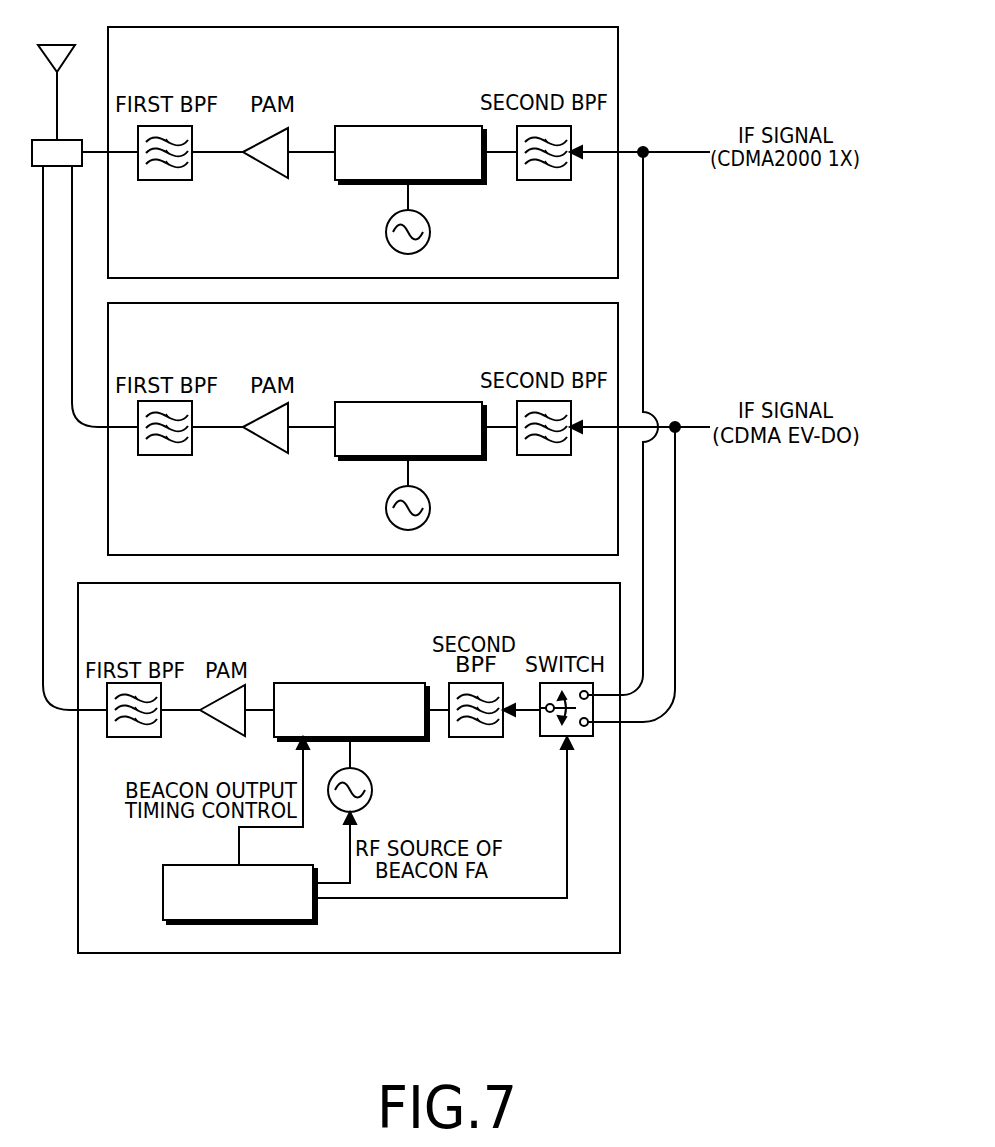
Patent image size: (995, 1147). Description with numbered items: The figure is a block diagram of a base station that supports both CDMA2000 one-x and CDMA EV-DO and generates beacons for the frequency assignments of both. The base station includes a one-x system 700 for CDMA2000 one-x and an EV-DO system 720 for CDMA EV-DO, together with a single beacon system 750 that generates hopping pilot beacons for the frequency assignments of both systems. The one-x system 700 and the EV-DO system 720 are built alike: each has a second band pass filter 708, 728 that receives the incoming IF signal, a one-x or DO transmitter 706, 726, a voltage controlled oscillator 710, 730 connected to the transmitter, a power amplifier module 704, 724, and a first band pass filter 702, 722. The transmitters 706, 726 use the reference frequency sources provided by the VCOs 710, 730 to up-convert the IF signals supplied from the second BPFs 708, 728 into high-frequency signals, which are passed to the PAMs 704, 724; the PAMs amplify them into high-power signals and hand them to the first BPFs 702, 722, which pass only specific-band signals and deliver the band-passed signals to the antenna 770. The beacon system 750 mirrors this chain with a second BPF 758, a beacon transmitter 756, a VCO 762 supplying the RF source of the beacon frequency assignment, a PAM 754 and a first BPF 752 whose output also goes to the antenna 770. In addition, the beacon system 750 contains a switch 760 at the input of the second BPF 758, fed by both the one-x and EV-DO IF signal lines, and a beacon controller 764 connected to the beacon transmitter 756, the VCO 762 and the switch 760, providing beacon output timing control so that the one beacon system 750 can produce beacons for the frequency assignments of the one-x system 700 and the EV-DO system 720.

The 1x system 700 is at (363, 152).
The first band pass filter 702 is at (166, 180).
The power amplifier module 704 is at (268, 177).
The 1x transmitter 706 is at (410, 126).
The second band pass filter 708 is at (543, 180).
The voltage controlled oscillator 710 is at (430, 233).
The EV-DO system 720 is at (363, 429).
The first band pass filter 722 is at (166, 456).
The power amplifier module 724 is at (268, 455).
The DO transmitter 726 is at (410, 402).
The second band pass filter 728 is at (543, 458).
The voltage controlled oscillator 730 is at (430, 508).
The beacon system 750 is at (349, 768).
The first band pass filter 752 is at (120, 737).
The power amplifier module 754 is at (246, 707).
The beacon transmitter 756 is at (350, 683).
The second band pass filter 758 is at (472, 738).
The switch 760 is at (554, 737).
The voltage controlled oscillator 762 is at (373, 792).
The beacon controller 764 is at (163, 892).
The antenna 770 is at (60, 46).